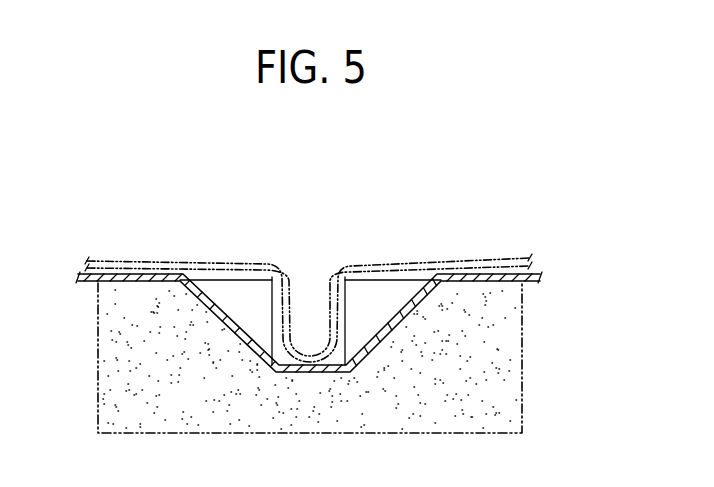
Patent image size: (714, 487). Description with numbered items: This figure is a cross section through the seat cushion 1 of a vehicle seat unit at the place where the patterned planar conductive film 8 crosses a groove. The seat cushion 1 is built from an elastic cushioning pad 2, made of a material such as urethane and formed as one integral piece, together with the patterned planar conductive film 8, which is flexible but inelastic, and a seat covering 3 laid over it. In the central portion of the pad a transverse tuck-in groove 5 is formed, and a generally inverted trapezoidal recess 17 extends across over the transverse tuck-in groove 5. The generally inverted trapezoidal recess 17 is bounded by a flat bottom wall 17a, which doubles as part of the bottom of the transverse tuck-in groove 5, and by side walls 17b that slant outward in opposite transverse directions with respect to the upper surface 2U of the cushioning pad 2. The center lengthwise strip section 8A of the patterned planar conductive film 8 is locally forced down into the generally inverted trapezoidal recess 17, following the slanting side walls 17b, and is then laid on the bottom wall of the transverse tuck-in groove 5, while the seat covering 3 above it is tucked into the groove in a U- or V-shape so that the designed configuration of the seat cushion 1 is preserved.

The seat cushion 1 is at (390, 245).
The elastic cushioning pad 2 is at (500, 417).
The upper surface of the cushioning pad 2U is at (220, 270).
The seat covering 3 is at (127, 262).
The transverse tuck-in groove 5 is at (318, 316).
The patterned planar conductive film 8 is at (530, 283).
The center lengthwise strip section 8A is at (168, 272).
The generally inverted trapezoidal recess 17 is at (307, 287).
The flat bottom wall 17a is at (313, 373).
The side walls 17b is at (236, 333).